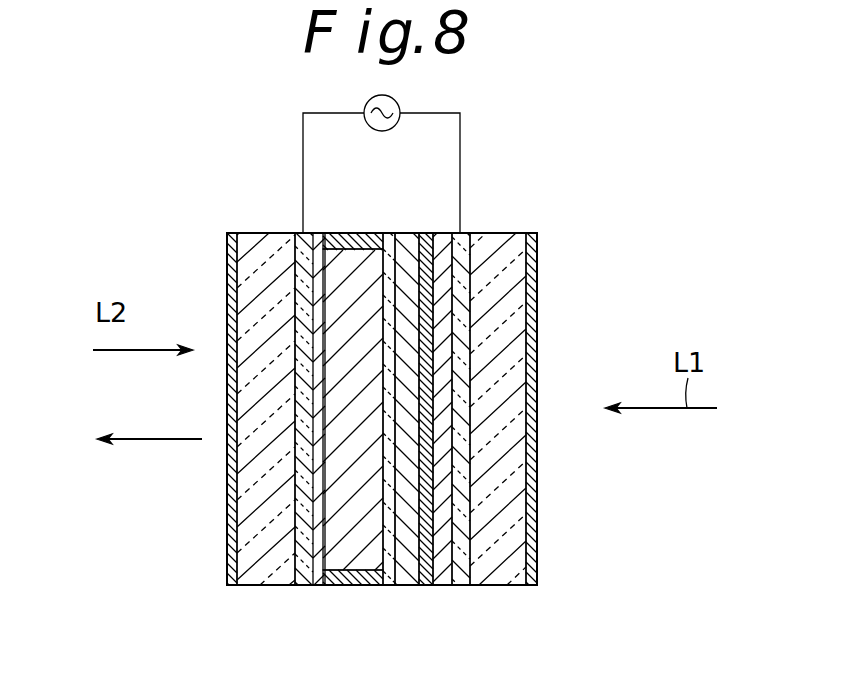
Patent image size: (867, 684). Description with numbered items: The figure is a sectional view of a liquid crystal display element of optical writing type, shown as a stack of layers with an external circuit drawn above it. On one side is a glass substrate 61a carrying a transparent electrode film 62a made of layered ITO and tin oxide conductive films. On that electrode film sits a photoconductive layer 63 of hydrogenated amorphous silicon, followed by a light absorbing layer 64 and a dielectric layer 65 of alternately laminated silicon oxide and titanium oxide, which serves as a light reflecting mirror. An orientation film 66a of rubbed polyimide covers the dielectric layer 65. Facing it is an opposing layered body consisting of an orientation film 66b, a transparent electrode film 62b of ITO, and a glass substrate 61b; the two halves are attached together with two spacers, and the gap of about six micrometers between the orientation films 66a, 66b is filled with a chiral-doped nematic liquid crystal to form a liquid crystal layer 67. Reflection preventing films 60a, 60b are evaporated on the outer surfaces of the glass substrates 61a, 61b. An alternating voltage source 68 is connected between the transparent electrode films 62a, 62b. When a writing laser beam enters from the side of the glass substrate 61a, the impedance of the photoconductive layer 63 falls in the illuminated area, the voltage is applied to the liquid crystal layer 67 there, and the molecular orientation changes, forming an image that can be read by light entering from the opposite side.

The reflection preventing film 60a is at (537, 257).
The reflection preventing film 60b is at (228, 250).
The glass substrate 61a is at (522, 233).
The glass substrate 61b is at (262, 232).
The transparent electrode film 62a is at (461, 583).
The transparent electrode film 62b is at (304, 577).
The photoconductive layer 63 is at (442, 233).
The light absorbing layer 64 is at (425, 233).
The dielectric layer 65 is at (395, 233).
The orientation film 66a is at (390, 585).
The orientation film 66b is at (321, 585).
The liquid crystal layer 67 is at (341, 268).
The alternating voltage source 68 is at (396, 105).